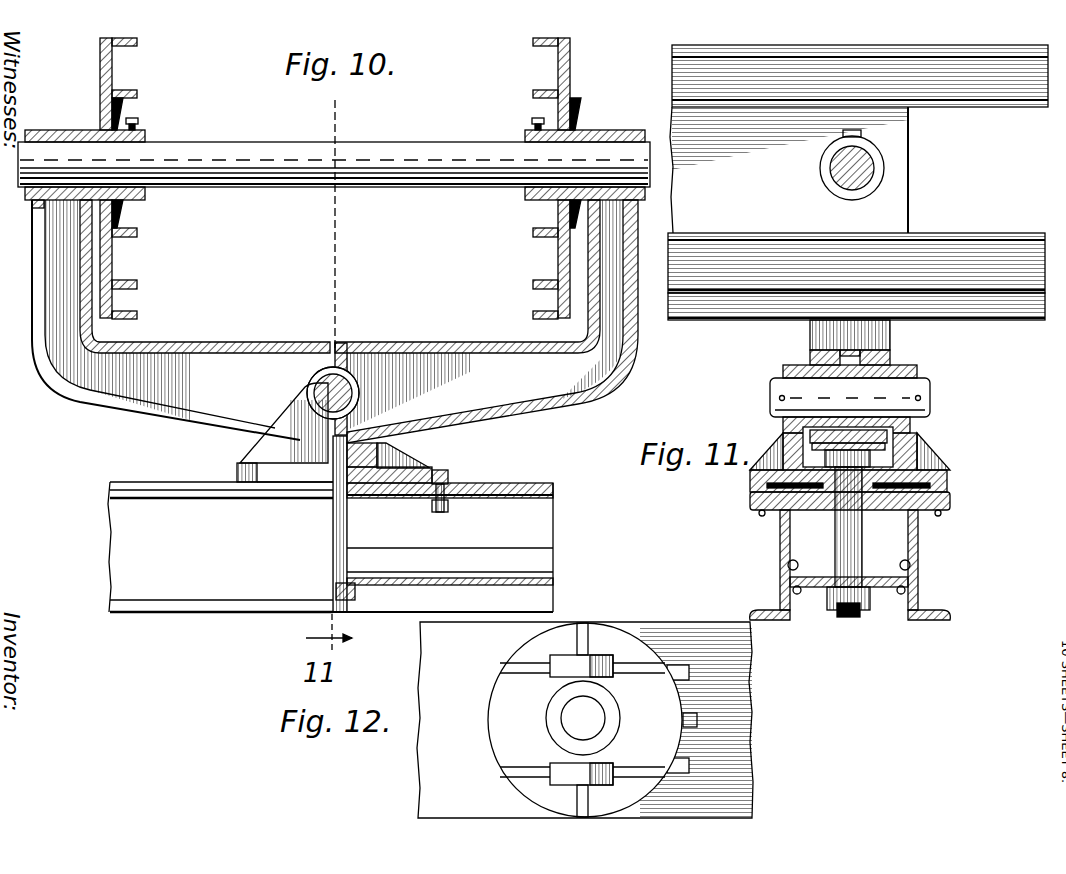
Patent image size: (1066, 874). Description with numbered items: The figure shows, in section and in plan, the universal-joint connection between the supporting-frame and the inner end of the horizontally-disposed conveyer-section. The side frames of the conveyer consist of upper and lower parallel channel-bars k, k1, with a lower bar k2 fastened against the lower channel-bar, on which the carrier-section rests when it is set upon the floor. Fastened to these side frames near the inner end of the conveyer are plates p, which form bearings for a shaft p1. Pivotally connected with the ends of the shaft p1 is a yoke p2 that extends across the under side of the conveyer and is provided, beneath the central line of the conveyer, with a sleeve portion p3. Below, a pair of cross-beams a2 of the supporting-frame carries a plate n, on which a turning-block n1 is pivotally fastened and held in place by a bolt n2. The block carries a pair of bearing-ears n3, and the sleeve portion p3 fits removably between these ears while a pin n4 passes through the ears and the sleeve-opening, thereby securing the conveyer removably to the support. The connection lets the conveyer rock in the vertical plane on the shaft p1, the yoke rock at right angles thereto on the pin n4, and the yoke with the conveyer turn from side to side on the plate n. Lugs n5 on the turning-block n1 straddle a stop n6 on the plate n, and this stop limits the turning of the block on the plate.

In FIG. 10, the upper channel-bar k is at (114, 72).
In FIG. 11, the upper channel-bar k is at (965, 85).
In FIG. 10, the lower channel-bar k1 is at (122, 256).
In FIG. 11, the lower channel-bar k1 is at (940, 243).
In FIG. 10, the lower bar k2 is at (122, 313).
In FIG. 11, the lower bar k2 is at (696, 318).
In FIG. 10, the plate p is at (100, 88).
In FIG. 11, the plate p is at (789, 170).
In FIG. 10, the shaft p1 is at (399, 152).
In FIG. 11, the shaft p1 is at (832, 178).
In FIG. 10, the yoke p2 is at (280, 342).
In FIG. 11, the yoke p2 is at (888, 357).
In FIG. 10, the sleeve portion p3 is at (352, 368).
In FIG. 11, the sleeve portion p3 is at (782, 420).
In FIG. 10, the plate n is at (514, 488).
In FIG. 12, the plate n is at (585, 720).
In FIG. 11, the plate n is at (950, 498).
In FIG. 10, the turning-block n1 is at (318, 437).
In FIG. 12, the turning-block n1 is at (585, 720).
In FIG. 11, the turning-block n1 is at (920, 455).
In FIG. 10, the bolt n2 is at (350, 525).
In FIG. 12, the bolt n2 is at (583, 718).
In FIG. 11, the bolt n2 is at (842, 537).
In FIG. 10, the bearing-ears n3 is at (308, 386).
In FIG. 12, the bearing-ears n3 is at (570, 660).
In FIG. 11, the bearing-ears n3 is at (788, 370).
In FIG. 11, the pin n4 is at (920, 394).
In FIG. 10, the lugs n5 is at (447, 470).
In FIG. 12, the lugs n5 is at (688, 676).
In FIG. 10, the stop n6 is at (450, 478).
In FIG. 12, the stop n6 is at (700, 728).
In FIG. 10, the cross-beams a2 is at (395, 620).
In FIG. 11, the cross-beams a2 is at (780, 552).